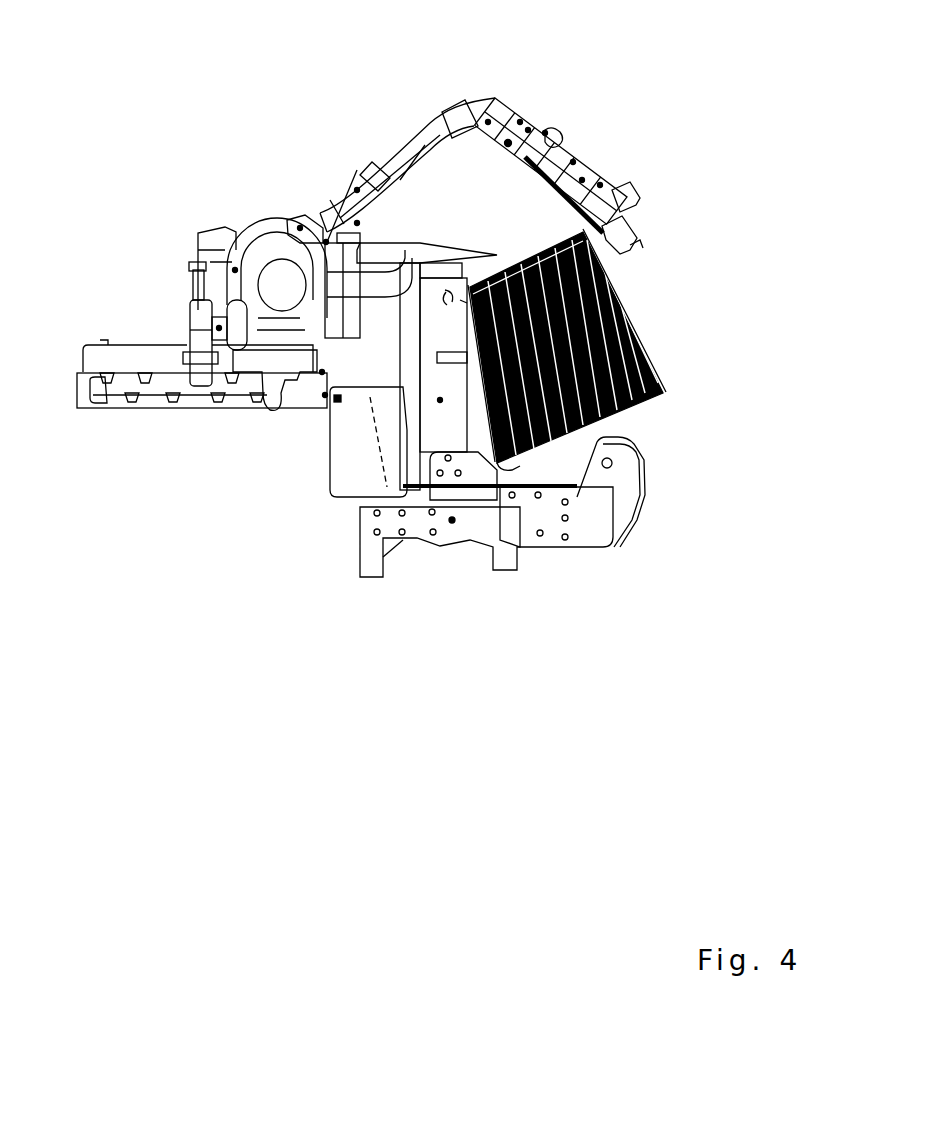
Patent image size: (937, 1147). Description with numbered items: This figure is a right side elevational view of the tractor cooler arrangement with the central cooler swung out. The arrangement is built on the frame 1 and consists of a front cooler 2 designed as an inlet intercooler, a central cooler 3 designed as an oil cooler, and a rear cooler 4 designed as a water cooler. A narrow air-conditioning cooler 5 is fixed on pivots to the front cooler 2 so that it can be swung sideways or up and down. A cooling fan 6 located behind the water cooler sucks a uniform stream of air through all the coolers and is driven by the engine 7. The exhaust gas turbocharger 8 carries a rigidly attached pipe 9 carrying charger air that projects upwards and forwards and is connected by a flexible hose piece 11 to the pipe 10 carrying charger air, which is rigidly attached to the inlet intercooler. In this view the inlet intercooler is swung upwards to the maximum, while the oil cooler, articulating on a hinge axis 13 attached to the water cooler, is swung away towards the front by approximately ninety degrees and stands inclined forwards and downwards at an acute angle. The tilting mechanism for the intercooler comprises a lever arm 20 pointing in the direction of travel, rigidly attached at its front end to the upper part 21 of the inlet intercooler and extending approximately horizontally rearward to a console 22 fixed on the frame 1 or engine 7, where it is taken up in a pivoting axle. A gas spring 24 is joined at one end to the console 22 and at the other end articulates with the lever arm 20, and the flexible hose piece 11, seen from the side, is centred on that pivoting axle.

The frame 1 is at (452, 520).
The front cooler 2 is at (600, 185).
The central cooler 3 is at (563, 447).
The rear cooler 4 is at (440, 400).
The air-conditioning cooler 5 is at (573, 162).
The cooling fan 6 is at (380, 365).
The engine 7 is at (250, 393).
The exhaust gas turbocharger 8 is at (190, 287).
The pipe carrying charger air 9 is at (235, 270).
The pipe carrying charger air 10 is at (488, 122).
The flexible hose piece 11 is at (300, 228).
The hinge axis 13 is at (497, 482).
The lever arm 20 is at (358, 190).
The upper part of the inlet intercooler 21 is at (517, 101).
The console 22 is at (326, 242).
The gas spring 24 is at (357, 223).